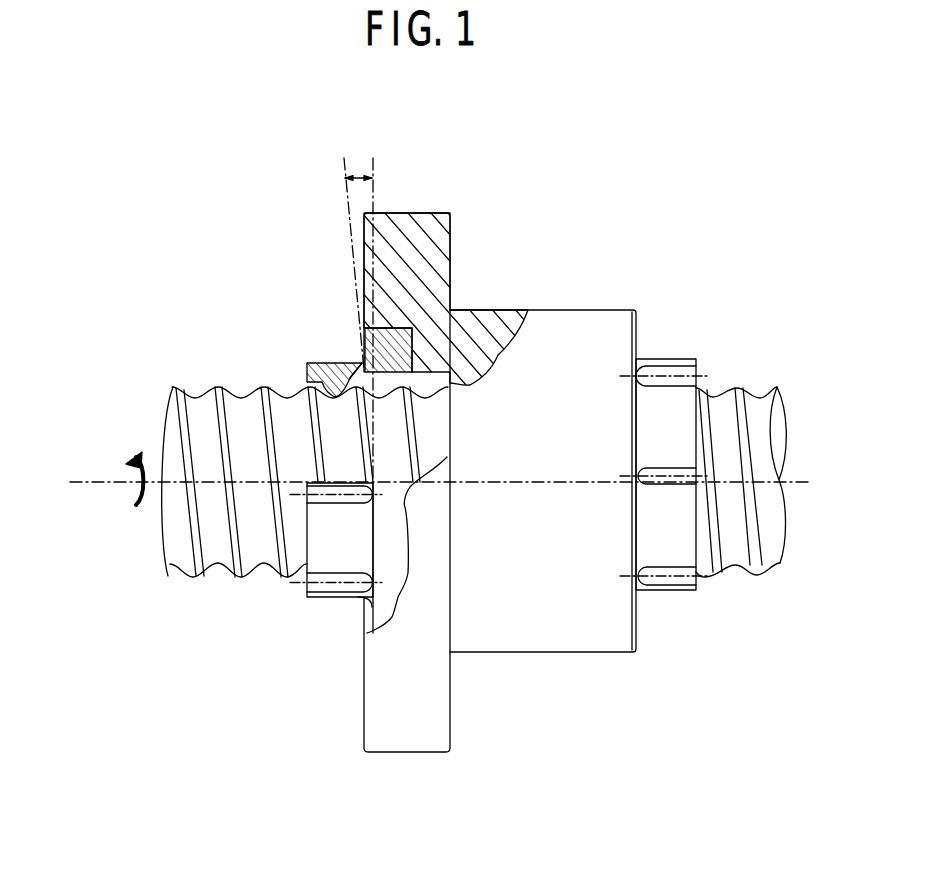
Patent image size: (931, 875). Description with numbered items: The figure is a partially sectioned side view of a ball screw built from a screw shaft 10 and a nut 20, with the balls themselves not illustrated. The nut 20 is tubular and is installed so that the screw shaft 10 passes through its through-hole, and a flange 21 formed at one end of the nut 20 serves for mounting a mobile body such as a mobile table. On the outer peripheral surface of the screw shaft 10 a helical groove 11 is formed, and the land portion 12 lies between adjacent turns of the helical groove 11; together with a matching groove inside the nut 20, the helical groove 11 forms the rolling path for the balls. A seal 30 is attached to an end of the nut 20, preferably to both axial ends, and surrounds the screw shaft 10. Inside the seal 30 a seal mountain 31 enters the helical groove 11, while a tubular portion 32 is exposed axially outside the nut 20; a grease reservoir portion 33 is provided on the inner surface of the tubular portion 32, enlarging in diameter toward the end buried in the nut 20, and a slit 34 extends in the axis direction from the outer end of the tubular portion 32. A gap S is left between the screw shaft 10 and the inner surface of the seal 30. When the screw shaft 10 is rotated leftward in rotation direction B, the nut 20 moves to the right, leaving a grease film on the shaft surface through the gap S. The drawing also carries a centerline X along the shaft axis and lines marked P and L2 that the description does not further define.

The screw shaft 10 is at (158, 571).
The helical groove 11 is at (217, 553).
The land portion 12 is at (218, 388).
The nut 20 is at (622, 670).
The flange 21 is at (423, 232).
The seal 30 is at (348, 356).
The seal mountain 31 is at (270, 388).
The tubular portion 32 is at (327, 362).
The grease reservoir portion 33 is at (393, 383).
The slit 34 is at (340, 497).
The gap S is at (303, 398).
The reference plane P is at (376, 194).
The inclined line L2 is at (345, 193).
The axis X is at (441, 483).
The rotation direction B is at (130, 484).